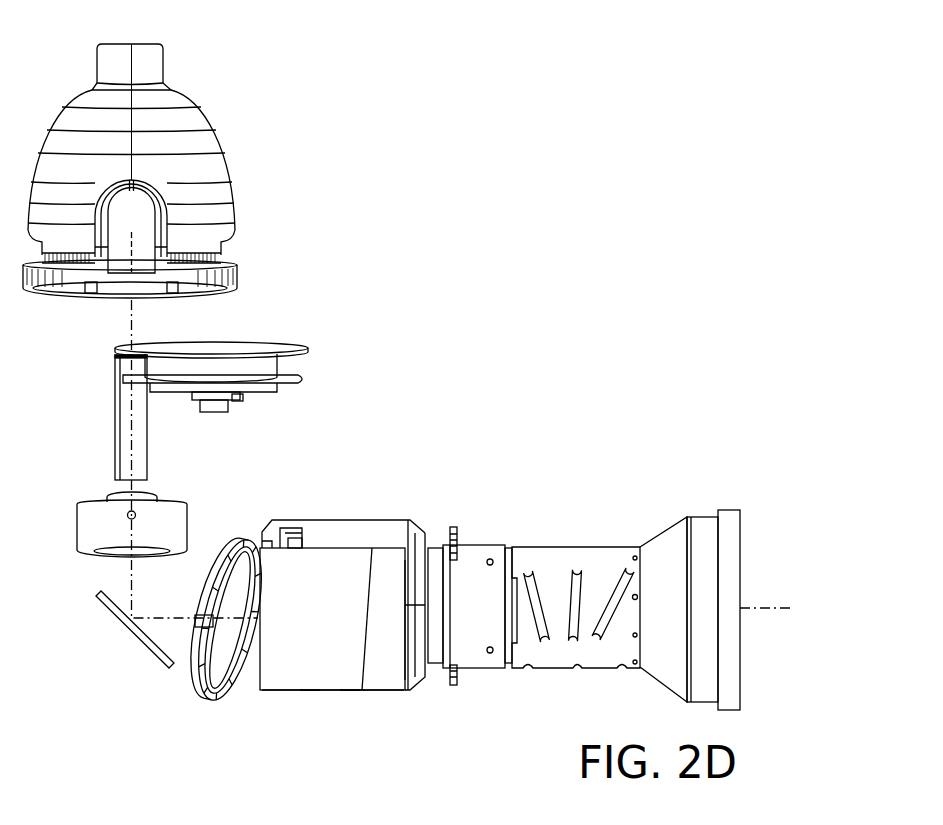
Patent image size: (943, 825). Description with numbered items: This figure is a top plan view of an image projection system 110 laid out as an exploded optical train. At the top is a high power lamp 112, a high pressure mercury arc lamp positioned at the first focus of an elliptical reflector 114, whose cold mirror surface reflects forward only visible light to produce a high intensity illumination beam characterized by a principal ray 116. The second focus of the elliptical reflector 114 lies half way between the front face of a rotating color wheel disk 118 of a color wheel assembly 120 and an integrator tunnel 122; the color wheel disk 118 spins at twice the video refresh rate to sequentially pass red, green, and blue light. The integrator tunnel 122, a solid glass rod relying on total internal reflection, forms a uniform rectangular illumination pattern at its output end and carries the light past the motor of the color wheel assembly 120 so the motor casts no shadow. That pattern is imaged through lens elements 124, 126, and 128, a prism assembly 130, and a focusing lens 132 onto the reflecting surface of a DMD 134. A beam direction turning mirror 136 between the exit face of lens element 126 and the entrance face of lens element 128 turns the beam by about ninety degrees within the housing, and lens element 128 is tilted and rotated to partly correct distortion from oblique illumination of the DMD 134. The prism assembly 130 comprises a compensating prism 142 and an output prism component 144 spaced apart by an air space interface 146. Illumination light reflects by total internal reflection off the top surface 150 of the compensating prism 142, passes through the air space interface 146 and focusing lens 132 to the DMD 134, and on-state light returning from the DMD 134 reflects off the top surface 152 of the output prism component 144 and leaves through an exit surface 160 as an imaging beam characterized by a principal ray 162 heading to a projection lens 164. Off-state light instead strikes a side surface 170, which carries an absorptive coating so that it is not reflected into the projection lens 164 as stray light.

The image projection system 110 is at (480, 371).
The high power lamp 112 is at (157, 65).
The elliptical reflector 114 is at (203, 144).
The principal ray 116 is at (133, 313).
The rotating color wheel disk 118 is at (287, 343).
The color wheel assembly 120 is at (322, 358).
The integrator tunnel 122 is at (143, 442).
The lens element 124 is at (145, 493).
The lens element 126 is at (145, 558).
The lens element 128 is at (203, 647).
The prism assembly 130 is at (328, 732).
The focusing lens 132 is at (297, 540).
The DMD 134 is at (412, 690).
The beam direction turning mirror 136 is at (123, 623).
The compensating prism 142 is at (289, 702).
The output prism component 144 is at (379, 702).
The air space interface 146 is at (365, 600).
The top surface 150 is at (328, 633).
The top surface 152 is at (385, 638).
The exit surface 160 is at (407, 655).
The principal ray 162 is at (763, 607).
The projection lens 164 is at (572, 560).
The side surface 170 is at (375, 522).